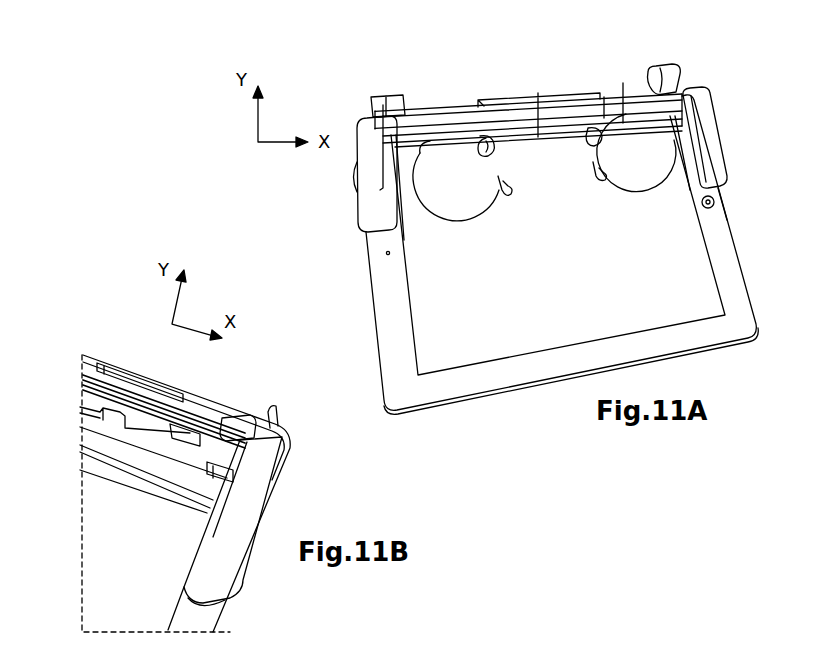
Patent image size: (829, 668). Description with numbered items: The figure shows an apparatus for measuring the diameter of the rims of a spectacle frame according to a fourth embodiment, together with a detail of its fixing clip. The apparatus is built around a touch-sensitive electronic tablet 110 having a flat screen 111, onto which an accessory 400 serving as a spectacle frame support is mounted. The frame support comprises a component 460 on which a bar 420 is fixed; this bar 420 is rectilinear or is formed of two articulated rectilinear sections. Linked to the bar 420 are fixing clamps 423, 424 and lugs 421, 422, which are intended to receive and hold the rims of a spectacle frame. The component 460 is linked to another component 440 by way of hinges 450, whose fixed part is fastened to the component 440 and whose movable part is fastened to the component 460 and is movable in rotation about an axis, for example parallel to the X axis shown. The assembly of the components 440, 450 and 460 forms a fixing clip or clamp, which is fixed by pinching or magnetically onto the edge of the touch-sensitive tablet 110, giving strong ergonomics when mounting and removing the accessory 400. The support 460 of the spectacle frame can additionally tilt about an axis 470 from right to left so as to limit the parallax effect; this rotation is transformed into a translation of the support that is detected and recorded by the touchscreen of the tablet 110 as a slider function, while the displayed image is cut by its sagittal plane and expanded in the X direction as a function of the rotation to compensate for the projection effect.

In FIG. 11A, the accessory 400 is at (352, 213).
In FIG. 11B, the electronic tablet 110 is at (290, 456).
In FIG. 11B, the flat screen 111 is at (167, 570).
In FIG. 11A, the bar 420 is at (564, 134).
In FIG. 11A, the lug 421 is at (481, 152).
In FIG. 11A, the lug 422 is at (622, 116).
In FIG. 11A, the fixing clamp 423 is at (508, 200).
In FIG. 11A, the fixing clamp 424 is at (596, 176).
In FIG. 11B, the component 440 is at (150, 385).
In FIG. 11A, the hinge 450 is at (392, 104).
In FIG. 11B, the hinge 450 is at (242, 424).
In FIG. 11A, the component 460 is at (440, 126).
In FIG. 11B, the component 460 is at (178, 428).
In FIG. 11A, the axis 470 is at (540, 98).